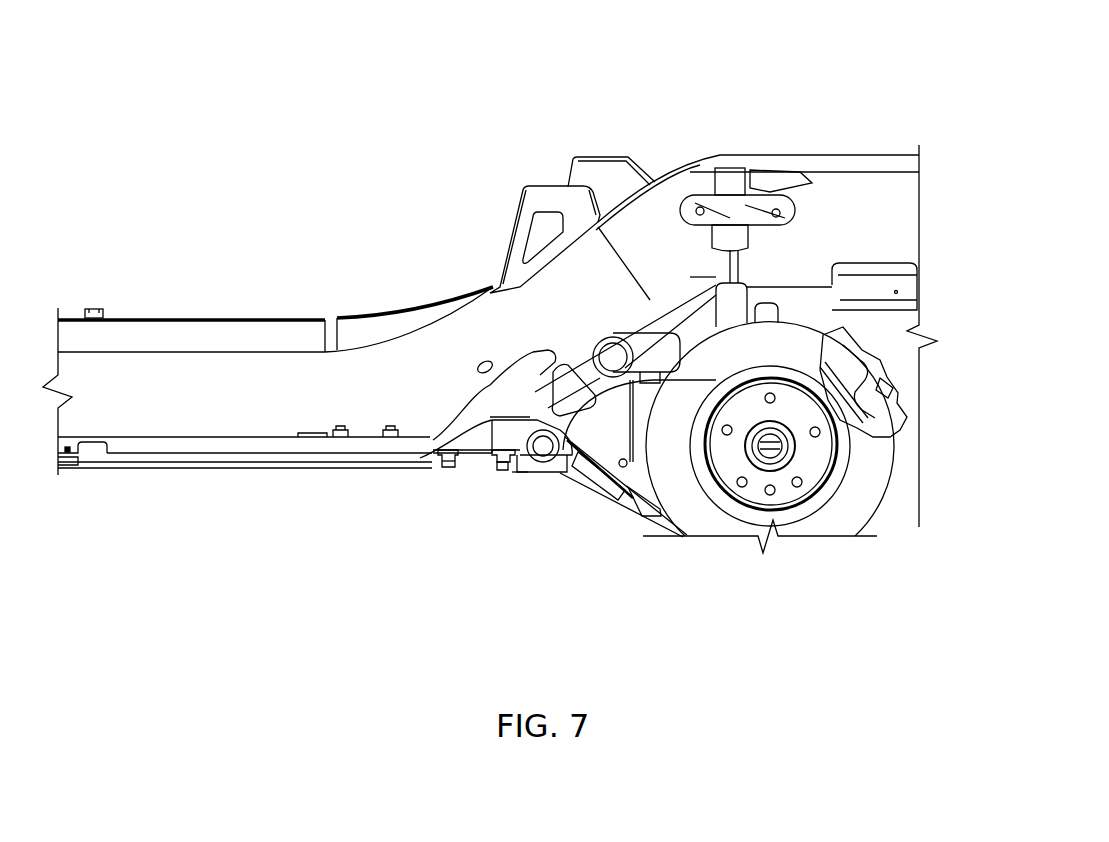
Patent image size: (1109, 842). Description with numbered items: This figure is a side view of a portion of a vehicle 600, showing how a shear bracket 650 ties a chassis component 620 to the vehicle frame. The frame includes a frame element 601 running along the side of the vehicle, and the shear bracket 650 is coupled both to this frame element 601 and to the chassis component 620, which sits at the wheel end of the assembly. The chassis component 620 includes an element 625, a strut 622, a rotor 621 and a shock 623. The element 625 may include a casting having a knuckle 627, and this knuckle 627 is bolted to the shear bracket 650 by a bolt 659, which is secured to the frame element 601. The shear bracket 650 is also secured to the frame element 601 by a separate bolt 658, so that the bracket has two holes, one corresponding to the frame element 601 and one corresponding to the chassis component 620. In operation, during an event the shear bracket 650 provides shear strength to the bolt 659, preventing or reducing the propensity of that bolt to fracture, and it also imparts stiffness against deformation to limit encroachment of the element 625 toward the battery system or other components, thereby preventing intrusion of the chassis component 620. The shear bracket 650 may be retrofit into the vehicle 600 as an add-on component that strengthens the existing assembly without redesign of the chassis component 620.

The vehicle 600 is at (369, 256).
The frame element 601 is at (193, 401).
The chassis component 620 is at (724, 537).
The rotor 621 is at (833, 361).
The strut 622 is at (618, 500).
The shock 623 is at (703, 275).
The element 625 is at (556, 520).
The knuckle 627 is at (522, 474).
The shear bracket 650 is at (472, 456).
The bolt 658 is at (446, 468).
The bolt 659 is at (502, 470).